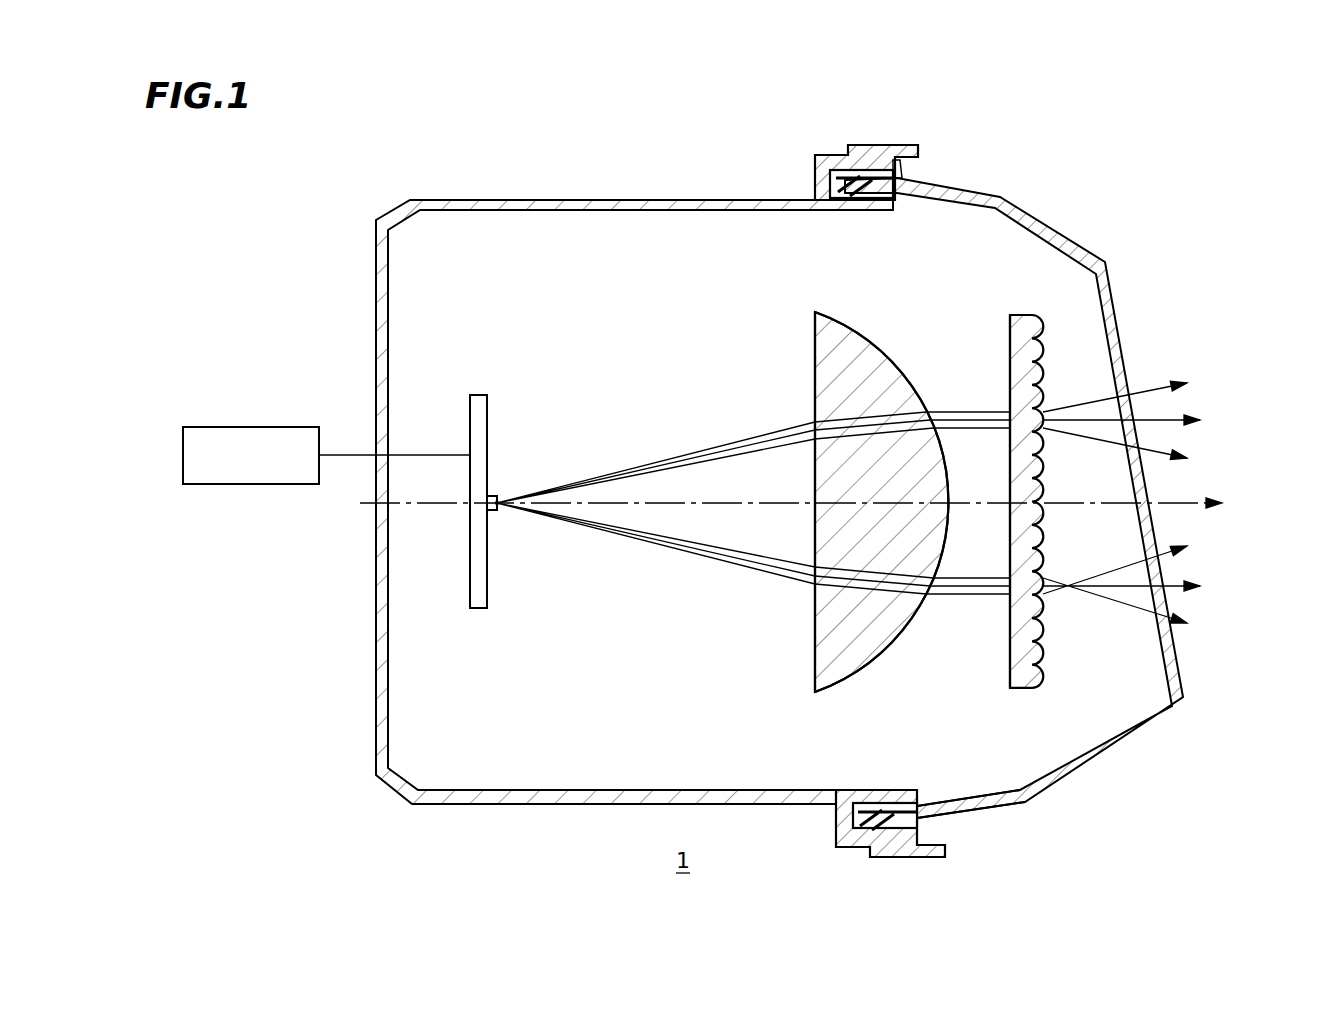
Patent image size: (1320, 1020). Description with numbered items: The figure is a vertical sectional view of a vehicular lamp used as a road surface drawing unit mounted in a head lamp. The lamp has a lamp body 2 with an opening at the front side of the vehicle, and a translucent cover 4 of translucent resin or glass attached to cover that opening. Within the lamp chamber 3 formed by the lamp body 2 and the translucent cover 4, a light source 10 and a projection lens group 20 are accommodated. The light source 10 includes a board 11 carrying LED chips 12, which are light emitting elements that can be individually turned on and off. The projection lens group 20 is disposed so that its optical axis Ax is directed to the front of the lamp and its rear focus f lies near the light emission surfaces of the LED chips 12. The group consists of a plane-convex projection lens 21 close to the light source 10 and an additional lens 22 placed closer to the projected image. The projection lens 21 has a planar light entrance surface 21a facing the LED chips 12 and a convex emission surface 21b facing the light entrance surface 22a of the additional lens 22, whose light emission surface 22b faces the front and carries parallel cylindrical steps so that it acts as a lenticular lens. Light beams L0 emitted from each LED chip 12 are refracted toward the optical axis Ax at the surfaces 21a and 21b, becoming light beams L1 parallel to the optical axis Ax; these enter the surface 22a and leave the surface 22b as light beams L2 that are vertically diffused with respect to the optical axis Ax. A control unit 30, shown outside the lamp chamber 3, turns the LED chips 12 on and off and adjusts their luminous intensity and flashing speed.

The lamp body 2 is at (463, 803).
The lamp chamber 3 is at (1016, 513).
The translucent cover 4 is at (1085, 785).
The light source 10 is at (516, 492).
The board 11 is at (482, 610).
The LED chips 12 is at (500, 508).
The rear focus f is at (526, 465).
The projection lens group 20 is at (1110, 132).
The projection lens 21 is at (845, 441).
The light entrance surface 21a is at (812, 605).
The light emission surface 21b is at (880, 657).
The additional lens 22 is at (1065, 410).
The light entrance surface 22a is at (1010, 385).
The light emission surface 22b is at (1042, 372).
The control unit 30 is at (262, 427).
The optical axis Ax is at (808, 503).
The light beams L0 is at (686, 545).
The light beams L1 is at (961, 596).
The light beams L2 is at (1103, 600).